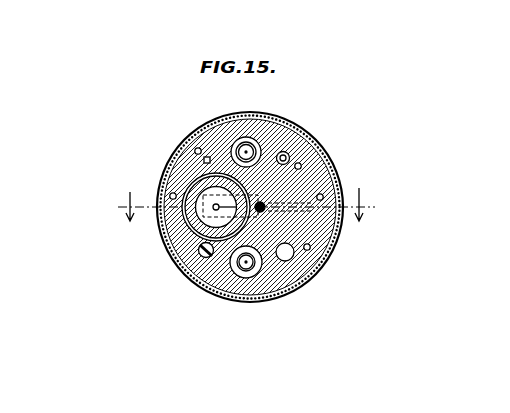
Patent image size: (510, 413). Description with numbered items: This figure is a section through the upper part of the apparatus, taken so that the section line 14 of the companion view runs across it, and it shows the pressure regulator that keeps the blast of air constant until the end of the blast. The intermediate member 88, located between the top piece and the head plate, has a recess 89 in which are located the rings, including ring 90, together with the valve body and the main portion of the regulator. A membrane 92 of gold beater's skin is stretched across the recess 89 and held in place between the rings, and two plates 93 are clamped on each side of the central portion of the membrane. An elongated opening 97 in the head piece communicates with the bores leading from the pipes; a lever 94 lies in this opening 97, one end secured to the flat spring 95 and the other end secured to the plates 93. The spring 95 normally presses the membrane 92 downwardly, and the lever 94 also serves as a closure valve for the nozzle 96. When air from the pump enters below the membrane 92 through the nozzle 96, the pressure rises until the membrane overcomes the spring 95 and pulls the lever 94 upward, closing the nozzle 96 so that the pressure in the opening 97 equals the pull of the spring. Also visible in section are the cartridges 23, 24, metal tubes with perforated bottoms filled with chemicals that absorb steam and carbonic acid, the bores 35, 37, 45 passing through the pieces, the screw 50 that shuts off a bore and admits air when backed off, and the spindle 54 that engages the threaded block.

The section line 14— 14 is at (244, 204).
The cartridge 23 is at (262, 278).
The cartridge 24 is at (229, 152).
The bore 35 is at (288, 260).
The bore 37 is at (309, 250).
The bore 45 is at (307, 156).
The screw 50 is at (294, 129).
The spindle 54 is at (183, 275).
The intermediate member 88 is at (216, 300).
The recess 89 is at (183, 215).
The ring 90 is at (167, 247).
The membrane 92 is at (202, 188).
The plates 93 is at (212, 202).
The lever 94 is at (203, 290).
The flat spring 95 is at (338, 183).
The nozzle 96 is at (333, 178).
The elongated opening 97 is at (326, 233).